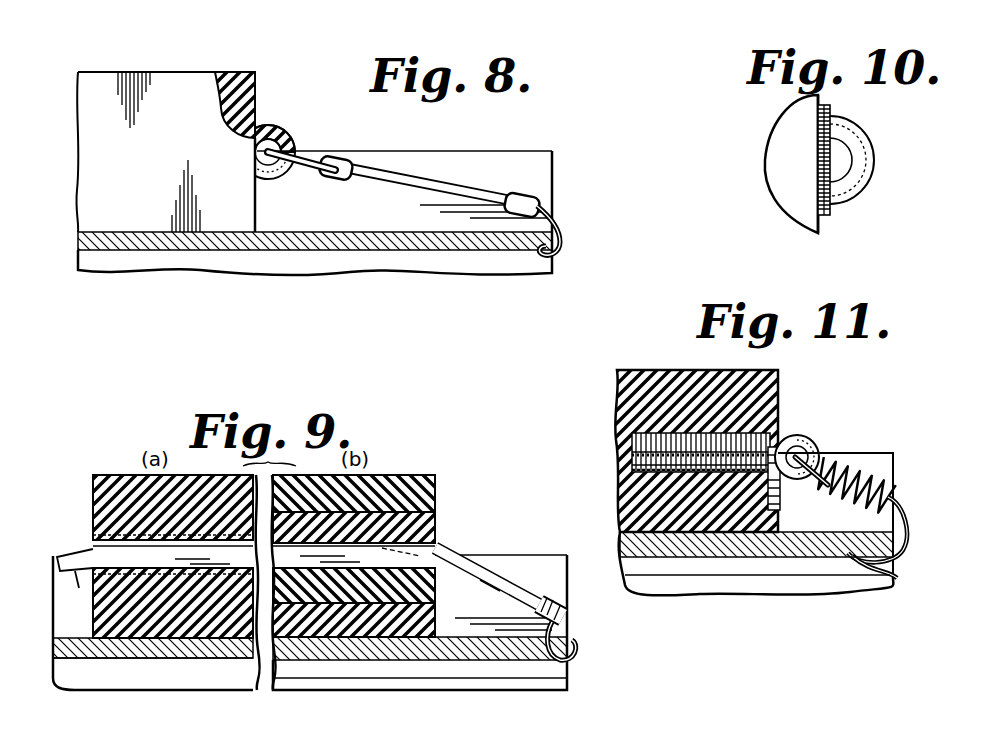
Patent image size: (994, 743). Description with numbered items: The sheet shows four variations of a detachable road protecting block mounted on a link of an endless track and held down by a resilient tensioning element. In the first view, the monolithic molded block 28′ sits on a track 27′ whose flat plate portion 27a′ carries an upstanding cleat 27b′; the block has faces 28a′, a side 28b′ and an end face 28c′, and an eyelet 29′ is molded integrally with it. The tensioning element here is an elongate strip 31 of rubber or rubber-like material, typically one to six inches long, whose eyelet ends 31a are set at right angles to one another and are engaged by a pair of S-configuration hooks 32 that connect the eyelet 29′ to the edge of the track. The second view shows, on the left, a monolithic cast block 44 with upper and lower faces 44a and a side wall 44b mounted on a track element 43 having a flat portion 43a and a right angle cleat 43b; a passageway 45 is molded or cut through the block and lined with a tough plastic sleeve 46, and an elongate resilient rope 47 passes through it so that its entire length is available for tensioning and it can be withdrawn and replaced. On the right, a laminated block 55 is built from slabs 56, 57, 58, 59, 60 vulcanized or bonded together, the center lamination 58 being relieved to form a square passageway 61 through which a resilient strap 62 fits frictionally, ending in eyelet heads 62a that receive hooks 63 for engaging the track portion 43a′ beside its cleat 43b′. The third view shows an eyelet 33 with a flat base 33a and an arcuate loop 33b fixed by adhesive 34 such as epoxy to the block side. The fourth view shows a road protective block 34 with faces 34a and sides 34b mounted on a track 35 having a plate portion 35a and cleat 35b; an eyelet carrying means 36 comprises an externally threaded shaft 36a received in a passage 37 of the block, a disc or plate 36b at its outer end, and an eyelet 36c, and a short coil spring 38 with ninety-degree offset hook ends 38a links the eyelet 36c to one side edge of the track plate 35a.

In FIG. 8, the track 27′ is at (351, 247).
In FIG. 8, the track flat portion 27a′ is at (278, 250).
In FIG. 8, the track cleat 27b′ is at (461, 150).
In FIG. 8, the block 28′ is at (249, 70).
In FIG. 8, the block face 28a′ is at (165, 72).
In FIG. 8, the block side 28b′ is at (257, 213).
In FIG. 8, the block end face 28c′ is at (104, 86).
In FIG. 8, the eyelet 29′ is at (281, 126).
In FIG. 8, the resilient strip 31 is at (450, 190).
In FIG. 8, the eyelet ends 31a is at (346, 162).
In FIG. 8, the S-configuration hooks 32 is at (318, 152).
In FIG. 10, the eyelet 33 is at (870, 143).
In FIG. 10, the flat base 33a is at (835, 110).
In FIG. 10, the arcuate eyelet 33b is at (858, 190).
In FIG. 10, the adhesive / road protective device 34 is at (817, 168).
In FIG. 11, the adhesive / road protective device 34 is at (627, 369).
In FIG. 9, the track element 43 is at (211, 660).
In FIG. 9, the track flat portion 43a is at (160, 650).
In FIG. 9, the track flat portion 43a′ is at (371, 652).
In FIG. 9, the right angle cleat 43b is at (62, 556).
In FIG. 9, the right angle cleat 43b′ is at (504, 562).
In FIG. 9, the monolithic block 44 is at (118, 475).
In FIG. 9, the upper and lower faces 44a is at (122, 640).
In FIG. 9, the side wall 44b is at (93, 622).
In FIG. 9, the passageway 45 is at (118, 540).
In FIG. 9, the plastic sleeve 46 is at (247, 570).
In FIG. 9, the resilient rope 47 is at (78, 586).
In FIG. 9, the laminated block 55 is at (386, 470).
In FIG. 9, the lamination 56 is at (440, 476).
In FIG. 9, the lamination 57 is at (440, 531).
In FIG. 9, the center lamination 58 is at (372, 558).
In FIG. 9, the lamination 59 is at (438, 595).
In FIG. 9, the lamination 60 is at (438, 626).
In FIG. 9, the passageway 61 is at (437, 517).
In FIG. 9, the resilient strap 62 is at (502, 580).
In FIG. 9, the eyelet heads 62a is at (566, 618).
In FIG. 9, the hooks 63 is at (578, 657).
In FIG. 11, the inner and outer faces 34a is at (709, 370).
In FIG. 11, the sides 34b is at (780, 525).
In FIG. 11, the track 35 is at (686, 559).
In FIG. 11, the horizontal plate portion 35a is at (757, 547).
In FIG. 11, the upstanding cleat 35b is at (893, 455).
In FIG. 11, the eyelet carrying means 36 is at (630, 461).
In FIG. 11, the threaded shaft 36a is at (655, 440).
In FIG. 11, the disc or plate 36b is at (779, 420).
In FIG. 11, the eyelet 36c is at (798, 436).
In FIG. 11, the passage 37 is at (638, 480).
In FIG. 11, the coil spring 38 is at (885, 478).
In FIG. 11, the hook ends 38a is at (802, 460).